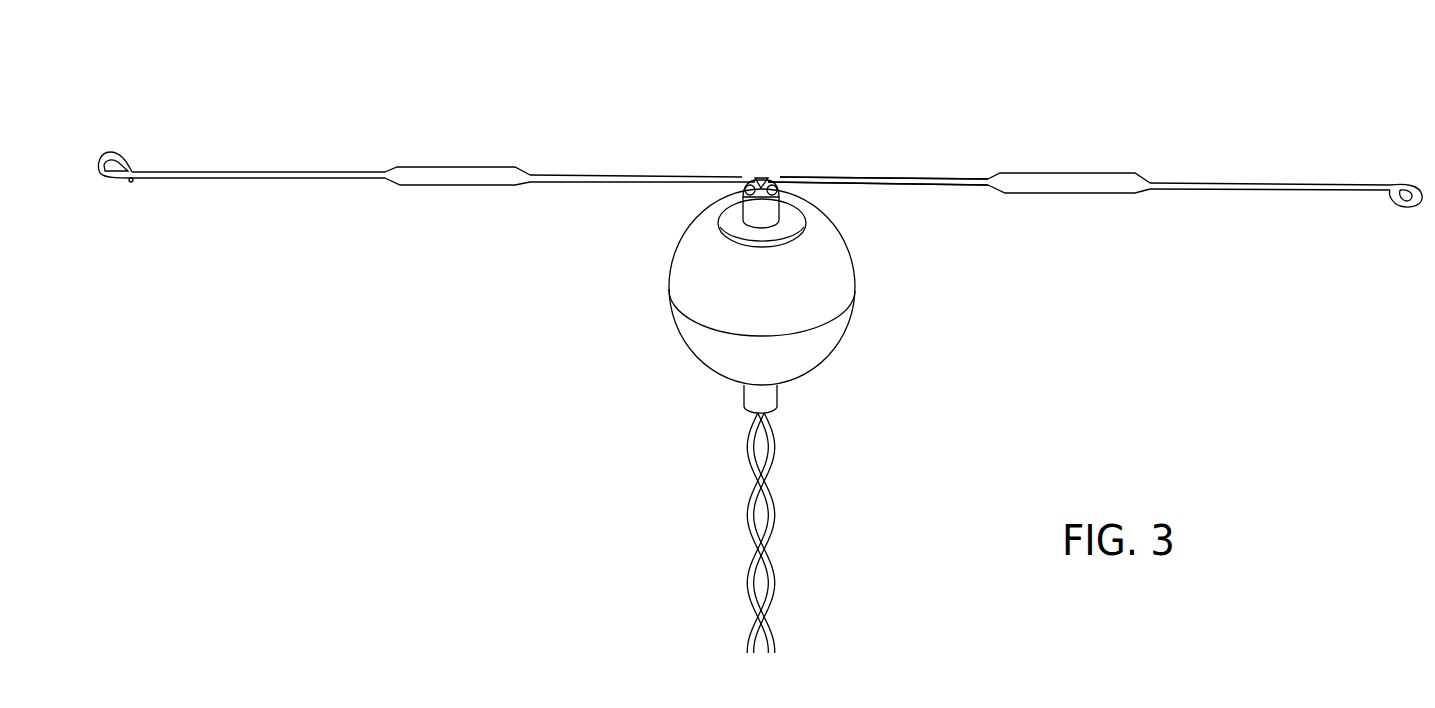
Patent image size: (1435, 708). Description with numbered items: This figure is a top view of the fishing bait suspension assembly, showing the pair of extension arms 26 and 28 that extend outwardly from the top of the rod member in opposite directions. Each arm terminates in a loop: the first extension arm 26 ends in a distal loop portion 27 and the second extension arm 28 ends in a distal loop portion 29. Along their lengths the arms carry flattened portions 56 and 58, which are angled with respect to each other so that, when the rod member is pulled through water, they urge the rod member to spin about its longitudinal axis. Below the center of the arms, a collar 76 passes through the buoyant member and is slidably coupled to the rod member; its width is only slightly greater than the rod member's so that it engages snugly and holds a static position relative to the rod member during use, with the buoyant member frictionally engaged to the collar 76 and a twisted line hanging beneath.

The first extension arm 26 is at (868, 178).
The distal loop portion 27 is at (1407, 185).
The second extension arm 28 is at (247, 173).
The distal loop portion 29 is at (107, 153).
The flattened portion 56 is at (1050, 182).
The flattened portion 58 is at (430, 167).
The collar 76 is at (772, 204).